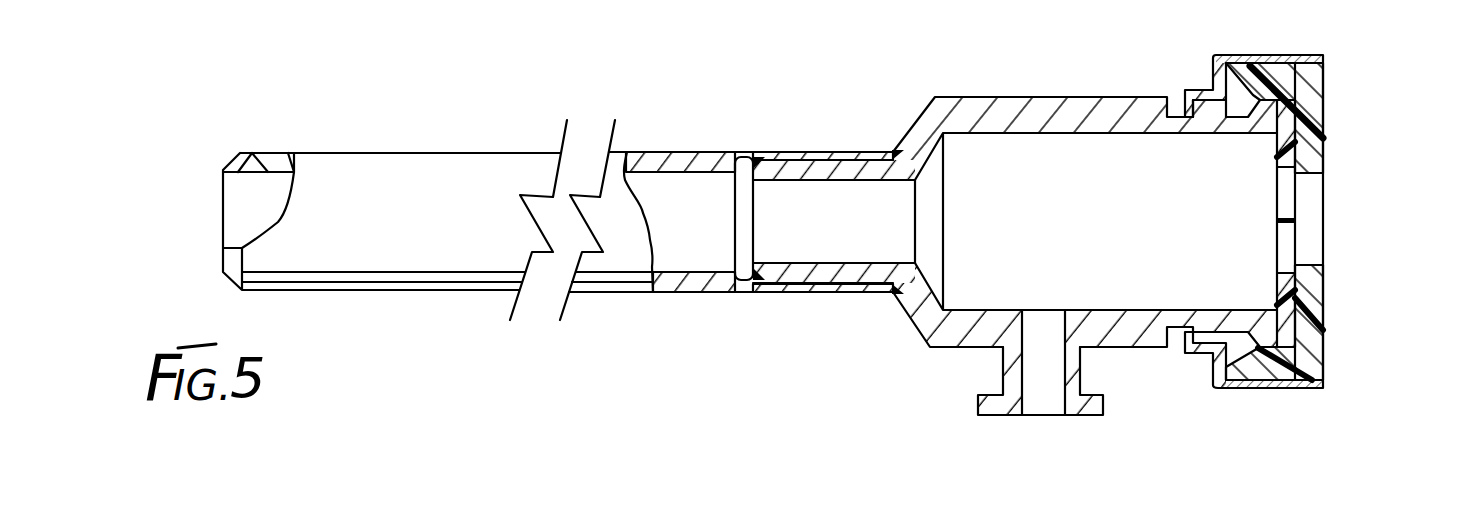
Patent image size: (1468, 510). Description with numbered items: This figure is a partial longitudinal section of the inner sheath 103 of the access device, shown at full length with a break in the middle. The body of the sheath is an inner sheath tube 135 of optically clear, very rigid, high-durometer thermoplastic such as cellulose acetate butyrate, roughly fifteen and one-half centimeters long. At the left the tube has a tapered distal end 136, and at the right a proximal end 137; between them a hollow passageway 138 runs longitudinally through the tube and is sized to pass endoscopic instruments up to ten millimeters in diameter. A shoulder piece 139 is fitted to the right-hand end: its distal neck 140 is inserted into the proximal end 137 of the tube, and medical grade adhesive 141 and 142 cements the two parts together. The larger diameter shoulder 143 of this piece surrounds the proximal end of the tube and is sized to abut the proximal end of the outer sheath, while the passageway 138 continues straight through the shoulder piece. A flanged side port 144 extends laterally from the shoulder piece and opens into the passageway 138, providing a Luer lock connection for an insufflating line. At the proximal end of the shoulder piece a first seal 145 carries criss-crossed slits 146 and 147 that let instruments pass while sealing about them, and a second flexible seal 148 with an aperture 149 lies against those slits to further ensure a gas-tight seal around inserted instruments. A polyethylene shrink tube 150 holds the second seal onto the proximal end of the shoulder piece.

The inner sheath 103 is at (669, 160).
The inner sheath tube 135 is at (356, 151).
The tapered distal end 136 is at (225, 168).
The proximal end 137 is at (749, 152).
The hollow passageway 138 is at (645, 186).
The shoulder piece 139 is at (1112, 52).
The distal neck 140 is at (845, 168).
The medical grade adhesive 141 is at (747, 283).
The medical grade adhesive 142 is at (893, 293).
The larger diameter shoulder 143 is at (977, 97).
The side port 144 is at (1003, 360).
The first seal 145 is at (1298, 200).
The criss-crossed slit 146 is at (1295, 225).
The criss-crossed slit 147 is at (1297, 252).
The second flexible seal 148 is at (1327, 113).
The aperture 149 is at (1317, 185).
The polyethylene shrink tube 150 is at (1318, 53).